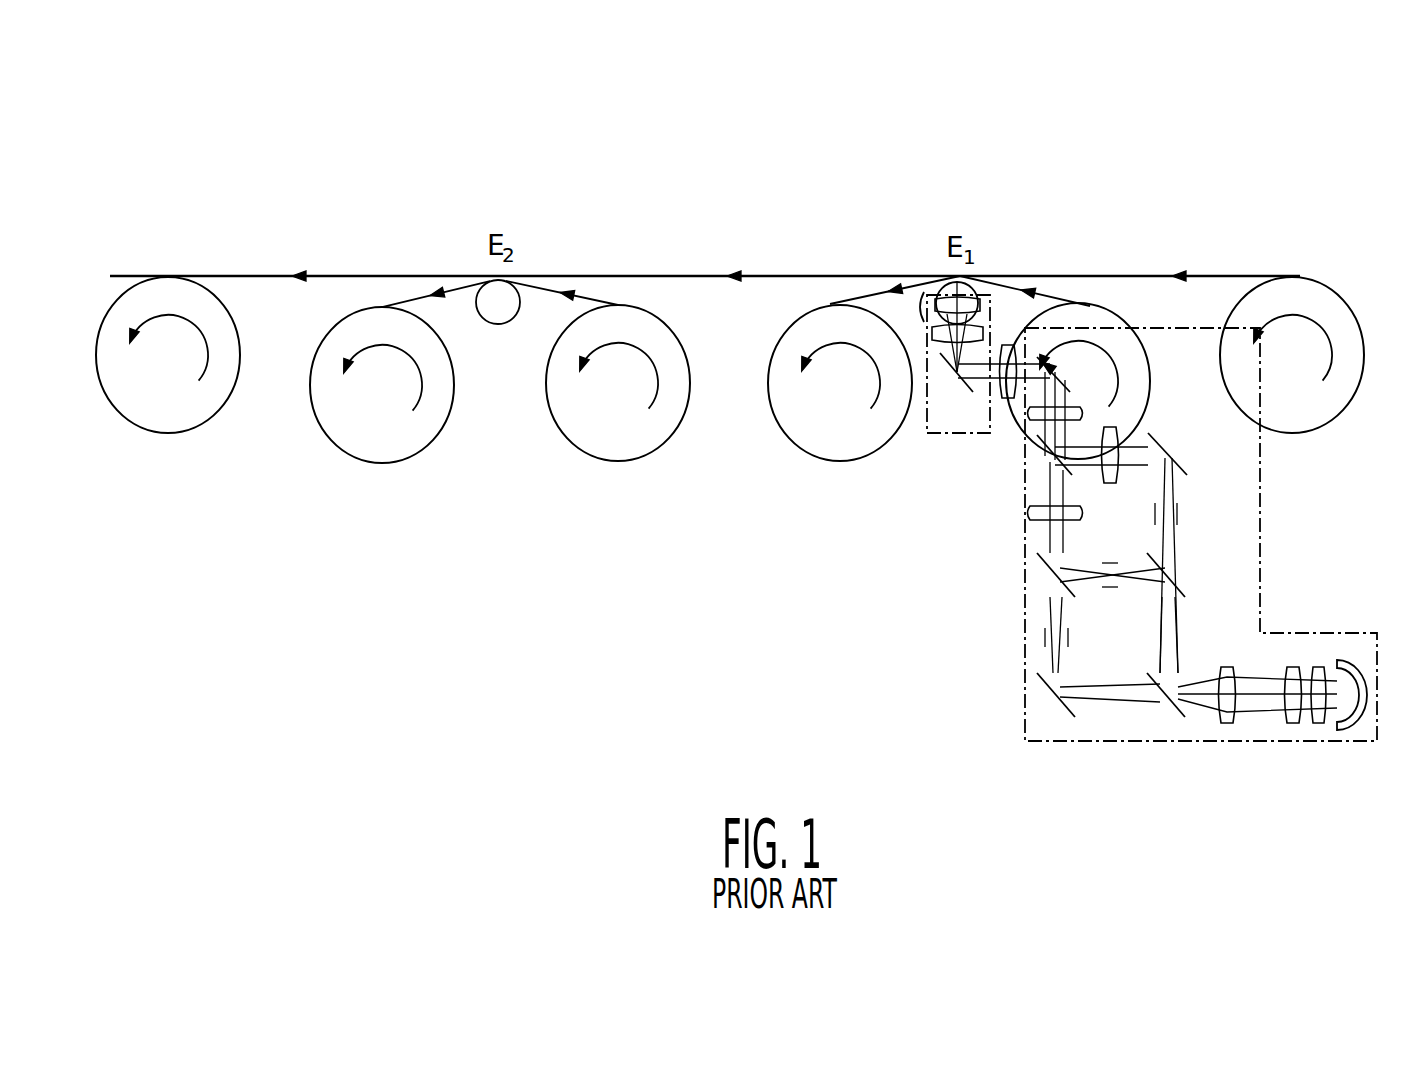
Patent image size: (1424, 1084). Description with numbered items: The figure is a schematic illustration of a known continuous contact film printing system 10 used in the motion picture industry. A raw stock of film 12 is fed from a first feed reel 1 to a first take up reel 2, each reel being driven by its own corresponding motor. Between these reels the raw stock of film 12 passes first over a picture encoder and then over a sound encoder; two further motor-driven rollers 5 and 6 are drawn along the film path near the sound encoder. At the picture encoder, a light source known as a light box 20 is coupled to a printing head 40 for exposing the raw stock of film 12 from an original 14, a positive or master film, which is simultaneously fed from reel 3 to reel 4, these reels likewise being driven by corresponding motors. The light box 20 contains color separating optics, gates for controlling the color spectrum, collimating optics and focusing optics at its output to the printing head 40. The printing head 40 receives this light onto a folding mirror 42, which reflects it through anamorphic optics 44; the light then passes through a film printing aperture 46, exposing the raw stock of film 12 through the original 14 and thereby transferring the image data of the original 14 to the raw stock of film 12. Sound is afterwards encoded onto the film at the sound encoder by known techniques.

The first feed reel 1 is at (1340, 294).
The first take up reel 2 is at (130, 285).
The reel 3 is at (1093, 306).
The reel 4 is at (800, 449).
The fifth drum M5 5 is at (653, 452).
The sixth drum M6 6 is at (318, 418).
The film printing system 10 is at (1377, 141).
The raw stock of film 12 is at (1225, 275).
The original 14 is at (1053, 297).
The light box 20 is at (1025, 632).
The printing head 40 is at (955, 367).
The folding mirror 42 is at (965, 385).
The anamorphic optics 44 is at (915, 317).
The film printing aperture 46 is at (967, 277).